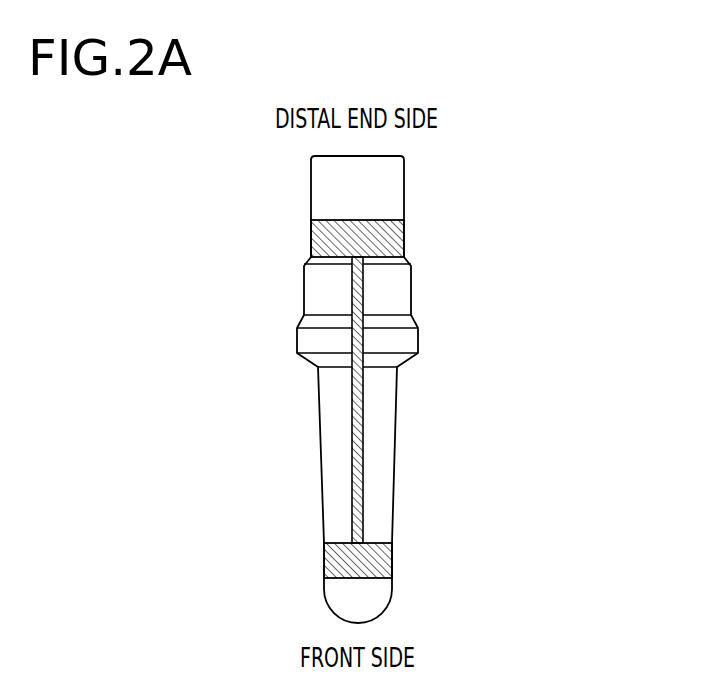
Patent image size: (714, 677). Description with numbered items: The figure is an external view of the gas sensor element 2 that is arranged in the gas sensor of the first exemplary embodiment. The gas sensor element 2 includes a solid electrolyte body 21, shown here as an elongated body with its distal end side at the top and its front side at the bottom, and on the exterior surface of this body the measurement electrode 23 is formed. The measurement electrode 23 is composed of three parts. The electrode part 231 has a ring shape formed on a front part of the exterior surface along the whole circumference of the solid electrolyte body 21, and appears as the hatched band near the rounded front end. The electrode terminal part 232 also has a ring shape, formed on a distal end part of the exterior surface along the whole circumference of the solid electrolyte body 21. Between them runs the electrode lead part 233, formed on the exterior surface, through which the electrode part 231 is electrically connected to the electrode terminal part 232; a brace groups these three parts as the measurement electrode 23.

The gas sensor element 2 is at (496, 173).
The solid electrolyte body 21 is at (336, 459).
The measurement electrode 23 is at (530, 225).
The electrode part 231 is at (364, 562).
The electrode terminal part 232 is at (402, 243).
The electrode lead part 233 is at (364, 402).